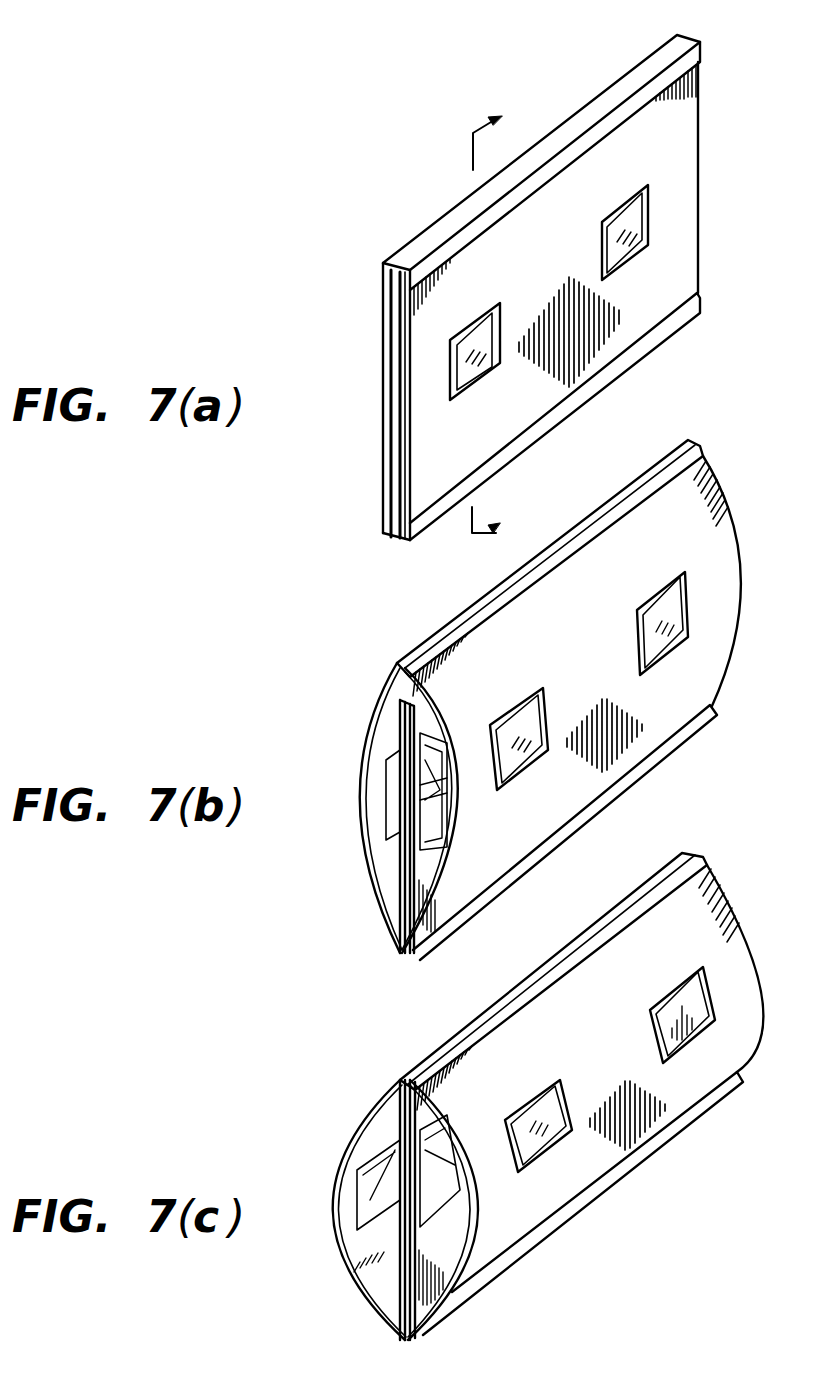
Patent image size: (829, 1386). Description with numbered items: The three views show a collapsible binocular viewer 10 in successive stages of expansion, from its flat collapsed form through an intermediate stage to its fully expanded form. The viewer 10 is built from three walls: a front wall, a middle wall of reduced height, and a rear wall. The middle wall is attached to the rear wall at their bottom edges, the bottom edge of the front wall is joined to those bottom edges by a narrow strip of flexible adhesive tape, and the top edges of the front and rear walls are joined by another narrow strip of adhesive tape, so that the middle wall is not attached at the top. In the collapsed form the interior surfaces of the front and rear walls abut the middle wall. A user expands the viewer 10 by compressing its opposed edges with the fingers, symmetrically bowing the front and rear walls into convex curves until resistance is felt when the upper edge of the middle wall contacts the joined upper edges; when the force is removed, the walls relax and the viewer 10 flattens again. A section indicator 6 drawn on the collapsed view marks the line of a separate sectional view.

The sheet assembly 10 is at (406, 178).
The section line 6 is at (500, 311).